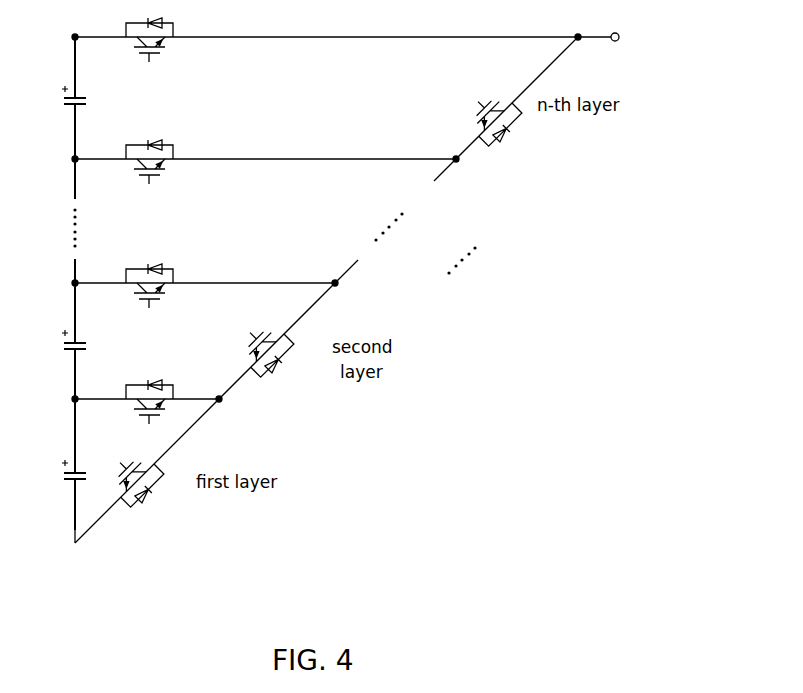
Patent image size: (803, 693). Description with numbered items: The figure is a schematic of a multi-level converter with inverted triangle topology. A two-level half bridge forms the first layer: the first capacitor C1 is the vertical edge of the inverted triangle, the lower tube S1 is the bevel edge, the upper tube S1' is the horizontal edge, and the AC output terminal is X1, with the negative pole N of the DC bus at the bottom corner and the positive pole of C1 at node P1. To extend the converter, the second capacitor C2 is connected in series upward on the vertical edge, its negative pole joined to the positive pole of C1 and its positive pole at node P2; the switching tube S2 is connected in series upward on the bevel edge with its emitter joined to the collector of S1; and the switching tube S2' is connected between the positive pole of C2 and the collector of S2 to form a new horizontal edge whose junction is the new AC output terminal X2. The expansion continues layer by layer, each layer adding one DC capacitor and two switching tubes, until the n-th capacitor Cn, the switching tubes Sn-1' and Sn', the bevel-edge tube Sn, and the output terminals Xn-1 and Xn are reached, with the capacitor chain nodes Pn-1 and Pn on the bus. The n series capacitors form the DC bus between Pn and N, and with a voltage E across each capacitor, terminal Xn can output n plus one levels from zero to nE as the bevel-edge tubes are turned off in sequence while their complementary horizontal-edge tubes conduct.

The positive pole of the DC bus Pn is at (314, 41).
The positive pole of the (n-1)-th capacitor Pn-1 is at (249, 163).
The positive pole of the second capacitor P2 is at (193, 287).
The positive pole of the first capacitor P1 is at (135, 403).
The negative pole of the DC bus N is at (63, 541).
The n-th capacitor Cn is at (57, 118).
The second capacitor C2 is at (57, 329).
The first capacitor C1 is at (57, 464).
The capacitor voltage E is at (99, 296).
The (n+1)-th switching tube Sn' is at (163, 45).
The (n-1)-th layer horizontal-edge switching tube Sn-1' is at (168, 166).
The fourth switching tube S2' is at (163, 290).
The second switching tube S1' is at (159, 404).
The first switching tube S1 is at (140, 482).
The third switching tube S2 is at (269, 352).
The n-th switching tube Sn is at (498, 121).
The AC output terminal of the first layer X1 is at (232, 408).
The new AC output terminal X2 is at (348, 292).
The AC output terminal of the (n-1)-th layer Xn-1 is at (475, 168).
The AC output terminal of the n-th layer Xn is at (597, 53).